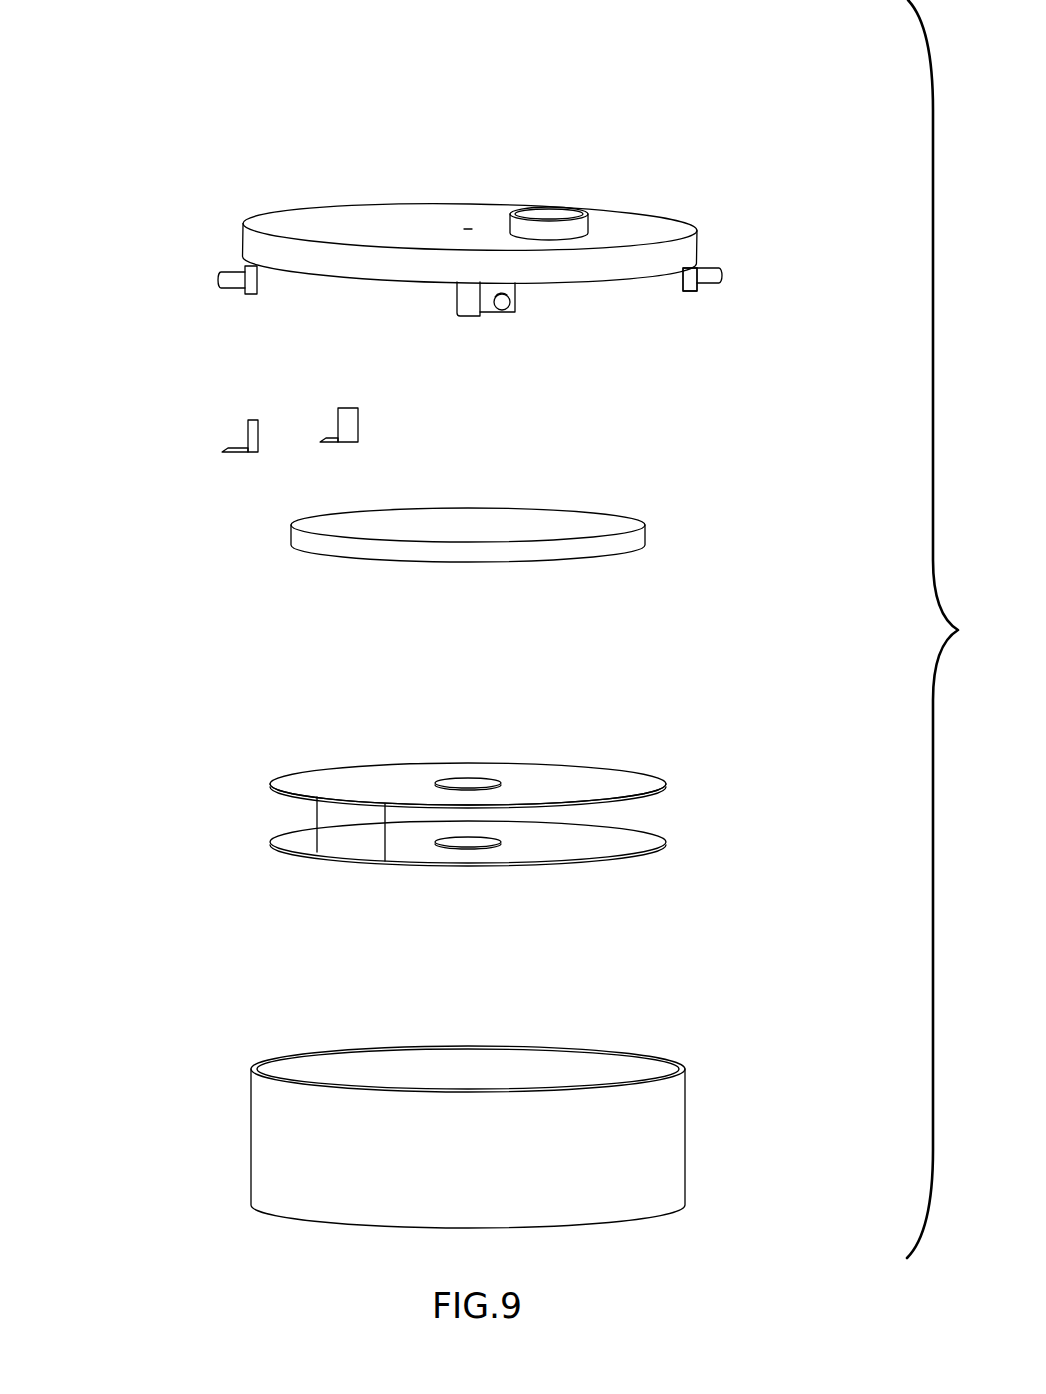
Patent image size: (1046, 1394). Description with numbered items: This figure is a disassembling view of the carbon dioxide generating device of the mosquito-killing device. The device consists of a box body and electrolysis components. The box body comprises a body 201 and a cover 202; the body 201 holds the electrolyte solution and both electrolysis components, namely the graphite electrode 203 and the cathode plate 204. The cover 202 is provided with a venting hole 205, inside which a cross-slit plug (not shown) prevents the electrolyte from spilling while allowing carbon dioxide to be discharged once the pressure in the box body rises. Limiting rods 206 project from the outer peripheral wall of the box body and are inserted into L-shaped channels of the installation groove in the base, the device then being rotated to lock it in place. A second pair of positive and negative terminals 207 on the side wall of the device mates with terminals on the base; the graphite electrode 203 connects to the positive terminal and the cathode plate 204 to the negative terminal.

The body 201 is at (657, 1147).
The cover 202 is at (410, 222).
The graphite electrode 203 is at (647, 527).
The cathode plate 204 is at (663, 785).
The venting hole 205 is at (553, 213).
The limiting rods 206 is at (717, 265).
The second pair of positive and negative terminals 207 is at (342, 418).